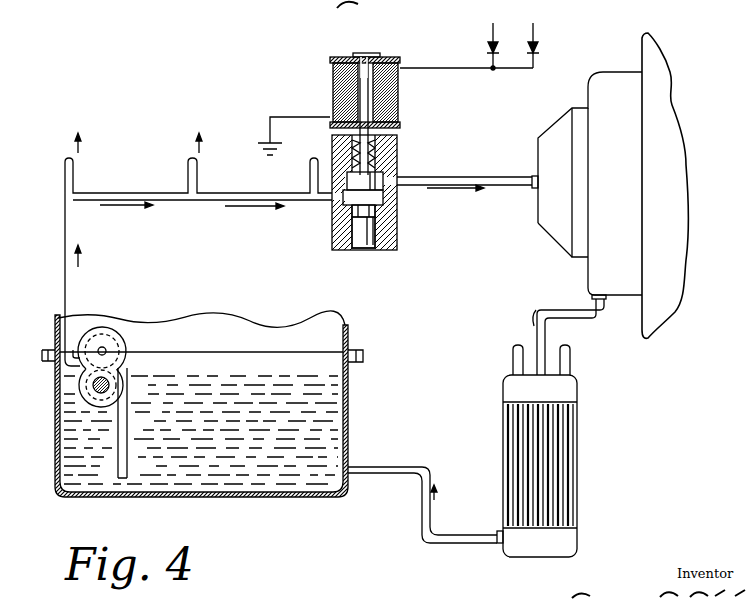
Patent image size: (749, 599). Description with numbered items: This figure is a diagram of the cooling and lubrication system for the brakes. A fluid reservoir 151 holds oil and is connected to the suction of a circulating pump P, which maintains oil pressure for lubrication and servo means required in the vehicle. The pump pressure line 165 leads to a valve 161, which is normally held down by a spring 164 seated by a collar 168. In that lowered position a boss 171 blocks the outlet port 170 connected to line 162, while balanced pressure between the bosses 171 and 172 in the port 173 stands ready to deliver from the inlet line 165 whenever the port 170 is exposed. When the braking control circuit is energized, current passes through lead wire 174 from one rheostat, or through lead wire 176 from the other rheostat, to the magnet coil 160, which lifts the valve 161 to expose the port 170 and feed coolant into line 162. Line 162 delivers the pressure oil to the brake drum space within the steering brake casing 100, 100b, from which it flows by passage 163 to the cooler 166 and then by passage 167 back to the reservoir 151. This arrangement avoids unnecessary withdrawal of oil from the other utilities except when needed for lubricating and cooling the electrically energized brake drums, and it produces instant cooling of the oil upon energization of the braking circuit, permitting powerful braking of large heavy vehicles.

The steering brake casing 100 is at (656, 317).
The steering brake casing portion 100b is at (612, 80).
The fluid reservoir 151 is at (270, 482).
The magnet coil 160 is at (333, 75).
The valve 161 is at (375, 227).
The line 162 is at (432, 177).
The passage 163 is at (547, 330).
The spring 164 is at (380, 155).
The pump pressure line 165 is at (222, 200).
The cooler 166 is at (572, 537).
The passage 167 is at (395, 472).
The collar 168 is at (363, 57).
The outlet port 170 is at (380, 187).
The boss 171 is at (357, 180).
The boss 172 is at (355, 232).
The port 173 is at (352, 198).
The lead wire 174 is at (493, 40).
The lead wire 176 is at (533, 40).
The circulating pump P is at (125, 330).